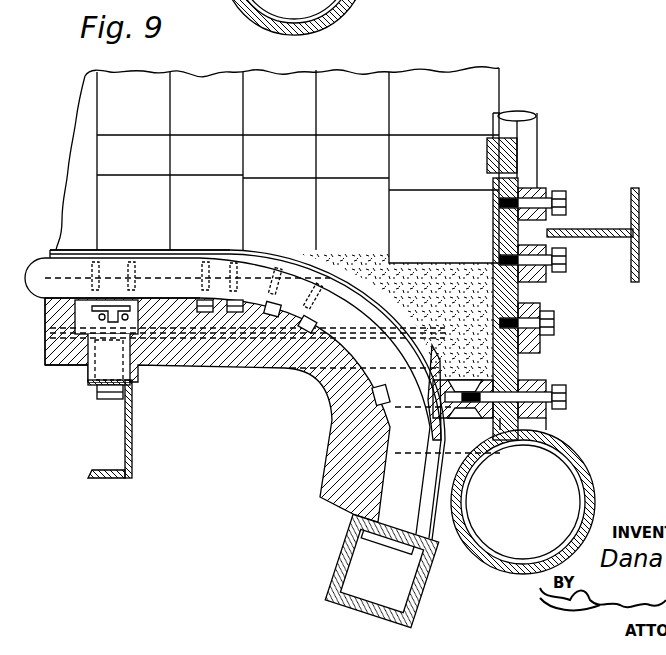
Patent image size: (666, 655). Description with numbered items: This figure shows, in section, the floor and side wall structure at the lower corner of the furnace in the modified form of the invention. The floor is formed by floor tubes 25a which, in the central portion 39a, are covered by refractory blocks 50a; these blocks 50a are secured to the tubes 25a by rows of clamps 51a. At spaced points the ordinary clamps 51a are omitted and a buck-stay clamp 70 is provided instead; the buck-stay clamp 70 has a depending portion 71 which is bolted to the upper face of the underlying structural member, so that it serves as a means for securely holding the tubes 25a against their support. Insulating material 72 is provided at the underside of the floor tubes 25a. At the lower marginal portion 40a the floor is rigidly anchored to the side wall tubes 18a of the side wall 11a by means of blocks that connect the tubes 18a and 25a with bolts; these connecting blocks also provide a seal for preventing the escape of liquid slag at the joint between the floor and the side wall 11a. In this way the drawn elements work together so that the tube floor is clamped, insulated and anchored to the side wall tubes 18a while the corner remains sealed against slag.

The side wall 11a is at (519, 143).
The side wall tube 18a is at (537, 163).
The floor tube 25a is at (187, 268).
The central portion 39a is at (77, 250).
The lower marginal portion 40a is at (465, 283).
The refractory block 50a is at (135, 258).
The clamp 51a is at (232, 328).
The buck-stay clamp 70 is at (143, 380).
The depending portion 71 is at (97, 353).
The insulating material 72 is at (53, 365).